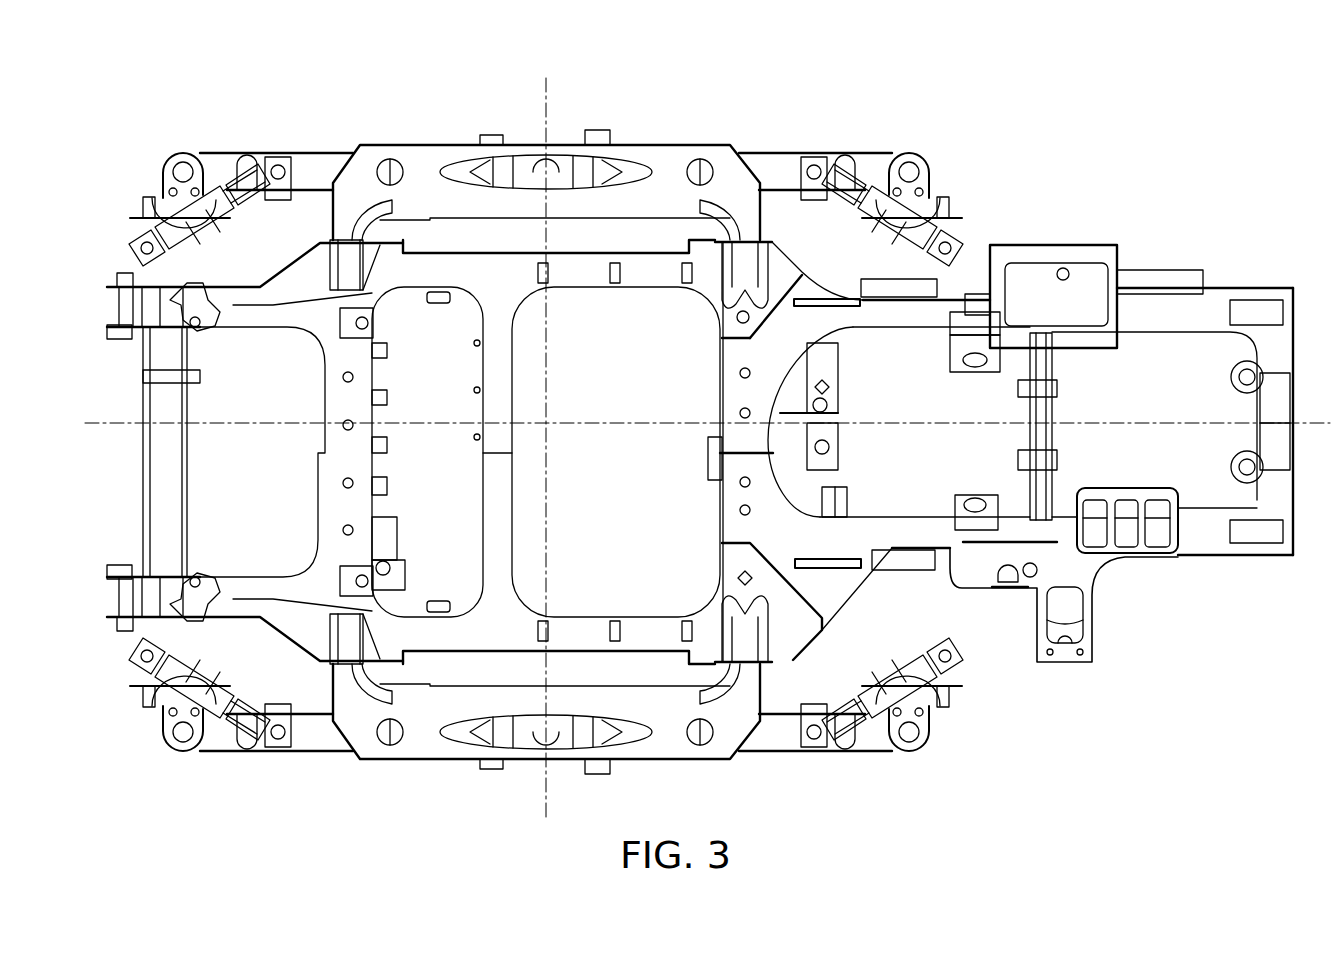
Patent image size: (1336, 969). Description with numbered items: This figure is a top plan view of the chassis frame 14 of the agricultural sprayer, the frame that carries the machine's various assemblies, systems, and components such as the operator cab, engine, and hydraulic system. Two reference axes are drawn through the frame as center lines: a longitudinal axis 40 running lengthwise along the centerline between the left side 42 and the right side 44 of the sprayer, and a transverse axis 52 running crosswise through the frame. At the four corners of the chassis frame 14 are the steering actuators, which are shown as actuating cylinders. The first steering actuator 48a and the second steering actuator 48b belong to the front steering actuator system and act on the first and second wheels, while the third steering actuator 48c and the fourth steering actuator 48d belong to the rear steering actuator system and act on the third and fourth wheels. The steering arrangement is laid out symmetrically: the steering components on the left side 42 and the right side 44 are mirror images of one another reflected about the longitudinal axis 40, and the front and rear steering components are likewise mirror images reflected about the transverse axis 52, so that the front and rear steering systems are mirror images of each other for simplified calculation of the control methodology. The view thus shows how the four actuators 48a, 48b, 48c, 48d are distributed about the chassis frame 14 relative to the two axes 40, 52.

The chassis frame 14 is at (586, 268).
The longitudinal axis 40 is at (118, 428).
The left side 42 is at (450, 747).
The right side 44 is at (448, 150).
The first steering actuator 48a is at (236, 717).
The second steering actuator 48b is at (243, 185).
The third steering actuator 48c is at (872, 752).
The fourth steering actuator 48d is at (870, 157).
The transverse axis 52 is at (548, 88).